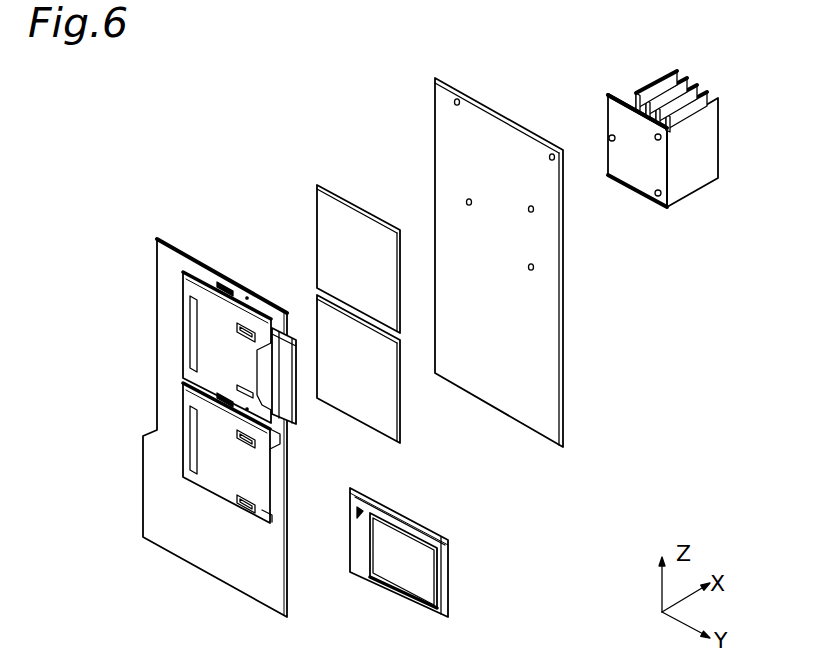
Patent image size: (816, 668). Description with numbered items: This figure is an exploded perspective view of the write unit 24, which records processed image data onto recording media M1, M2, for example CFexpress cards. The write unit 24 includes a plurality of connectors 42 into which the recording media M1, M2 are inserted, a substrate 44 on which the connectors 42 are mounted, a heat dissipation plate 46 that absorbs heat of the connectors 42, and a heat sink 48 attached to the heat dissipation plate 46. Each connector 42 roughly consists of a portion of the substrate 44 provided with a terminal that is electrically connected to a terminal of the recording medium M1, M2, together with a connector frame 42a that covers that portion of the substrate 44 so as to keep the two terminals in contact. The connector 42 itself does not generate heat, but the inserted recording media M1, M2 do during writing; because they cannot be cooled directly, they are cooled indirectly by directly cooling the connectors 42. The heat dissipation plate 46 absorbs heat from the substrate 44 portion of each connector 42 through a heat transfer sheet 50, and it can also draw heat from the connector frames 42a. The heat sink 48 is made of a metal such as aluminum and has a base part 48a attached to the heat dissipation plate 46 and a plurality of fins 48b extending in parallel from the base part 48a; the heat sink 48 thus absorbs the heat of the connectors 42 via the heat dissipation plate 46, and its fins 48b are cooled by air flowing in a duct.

The write unit 24 is at (212, 168).
The connector 42 is at (187, 313).
The connector frame 42a is at (190, 336).
The substrate 44 is at (163, 525).
The heat dissipation plate 46 is at (447, 128).
The heat sink 48 is at (676, 142).
The base part 48a is at (617, 95).
The fins 48b is at (677, 73).
The heat transfer sheet 50 is at (328, 240).
The recording medium M1 is at (450, 570).
The recording medium M2 is at (290, 403).